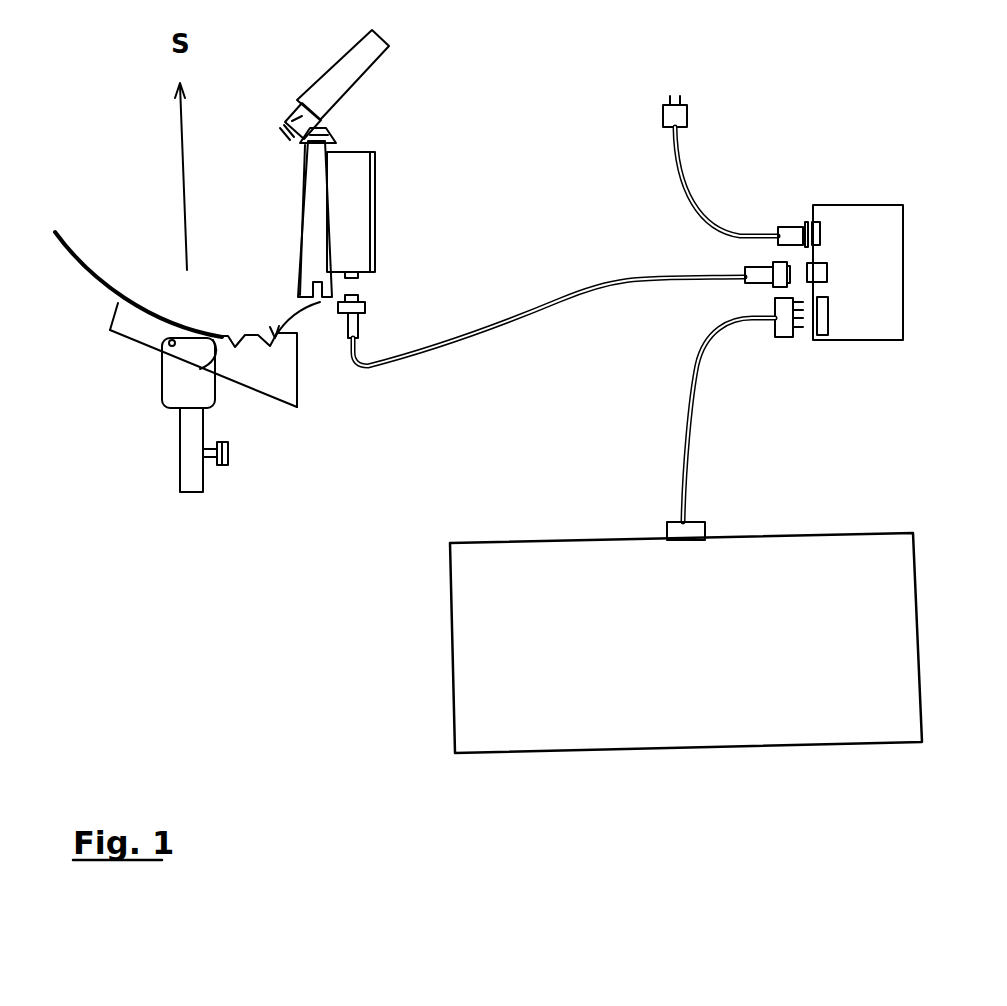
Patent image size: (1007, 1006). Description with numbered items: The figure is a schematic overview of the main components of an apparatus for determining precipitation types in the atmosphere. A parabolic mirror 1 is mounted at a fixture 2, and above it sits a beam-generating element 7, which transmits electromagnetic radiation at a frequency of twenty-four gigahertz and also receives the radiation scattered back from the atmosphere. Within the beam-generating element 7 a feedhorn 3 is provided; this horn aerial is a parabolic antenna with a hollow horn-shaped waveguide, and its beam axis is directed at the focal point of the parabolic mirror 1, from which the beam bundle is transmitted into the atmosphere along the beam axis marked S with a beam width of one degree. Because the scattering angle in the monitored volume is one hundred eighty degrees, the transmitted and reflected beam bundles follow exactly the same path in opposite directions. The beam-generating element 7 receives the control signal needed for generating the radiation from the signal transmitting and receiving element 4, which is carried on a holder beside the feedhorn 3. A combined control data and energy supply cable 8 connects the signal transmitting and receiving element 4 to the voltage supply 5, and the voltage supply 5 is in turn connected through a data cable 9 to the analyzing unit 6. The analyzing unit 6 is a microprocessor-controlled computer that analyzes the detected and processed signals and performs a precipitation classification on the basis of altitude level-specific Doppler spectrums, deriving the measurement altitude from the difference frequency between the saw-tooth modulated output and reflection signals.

The parabolic mirror 1 is at (138, 261).
The fixture 2 is at (200, 467).
The feedhorn 3 is at (332, 118).
The signal transmitting and receiving element 4 is at (338, 178).
The voltage supply 5 is at (783, 218).
The analyzing unit 6 is at (686, 643).
The beam generating element 7 is at (360, 55).
The combined control data and energy supply cable 8 is at (533, 312).
The data cable 9 is at (700, 377).